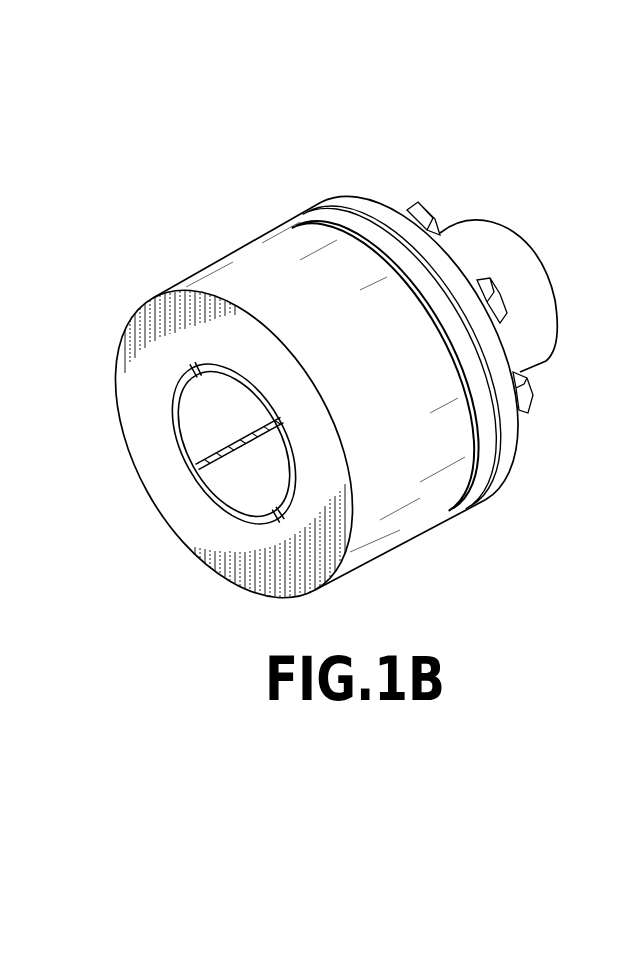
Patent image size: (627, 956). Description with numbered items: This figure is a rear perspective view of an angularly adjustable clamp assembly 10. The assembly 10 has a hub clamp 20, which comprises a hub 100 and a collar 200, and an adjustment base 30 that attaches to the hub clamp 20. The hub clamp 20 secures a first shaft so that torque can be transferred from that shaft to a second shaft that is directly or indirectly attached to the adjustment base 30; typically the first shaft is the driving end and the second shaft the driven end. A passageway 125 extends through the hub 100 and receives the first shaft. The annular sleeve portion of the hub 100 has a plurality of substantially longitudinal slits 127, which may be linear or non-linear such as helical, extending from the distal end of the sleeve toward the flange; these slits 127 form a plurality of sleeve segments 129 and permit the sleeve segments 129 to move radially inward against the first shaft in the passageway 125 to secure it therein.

The angularly adjustable clamp assembly 10 is at (192, 142).
The hub clamp 20 is at (413, 550).
The adjustment base 30 is at (387, 193).
The hub 100 is at (338, 218).
The collar 200 is at (217, 285).
The passageway 125 is at (230, 393).
The longitudinal slits 127 is at (272, 512).
The sleeve segments 129 is at (186, 449).